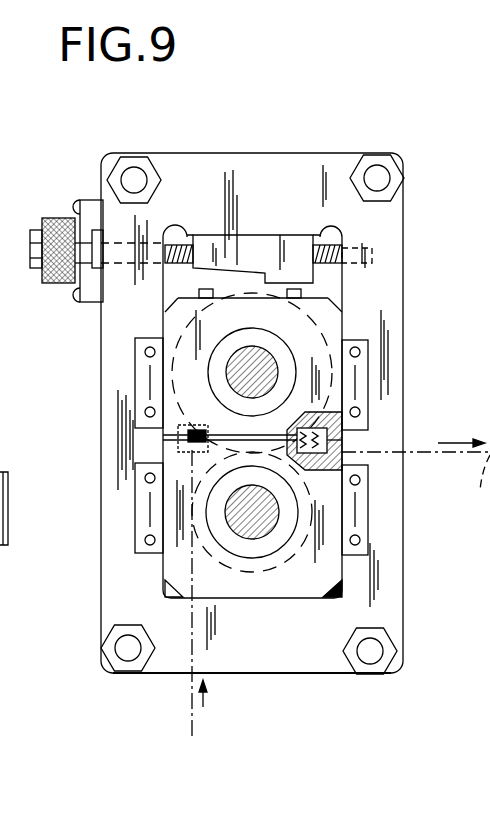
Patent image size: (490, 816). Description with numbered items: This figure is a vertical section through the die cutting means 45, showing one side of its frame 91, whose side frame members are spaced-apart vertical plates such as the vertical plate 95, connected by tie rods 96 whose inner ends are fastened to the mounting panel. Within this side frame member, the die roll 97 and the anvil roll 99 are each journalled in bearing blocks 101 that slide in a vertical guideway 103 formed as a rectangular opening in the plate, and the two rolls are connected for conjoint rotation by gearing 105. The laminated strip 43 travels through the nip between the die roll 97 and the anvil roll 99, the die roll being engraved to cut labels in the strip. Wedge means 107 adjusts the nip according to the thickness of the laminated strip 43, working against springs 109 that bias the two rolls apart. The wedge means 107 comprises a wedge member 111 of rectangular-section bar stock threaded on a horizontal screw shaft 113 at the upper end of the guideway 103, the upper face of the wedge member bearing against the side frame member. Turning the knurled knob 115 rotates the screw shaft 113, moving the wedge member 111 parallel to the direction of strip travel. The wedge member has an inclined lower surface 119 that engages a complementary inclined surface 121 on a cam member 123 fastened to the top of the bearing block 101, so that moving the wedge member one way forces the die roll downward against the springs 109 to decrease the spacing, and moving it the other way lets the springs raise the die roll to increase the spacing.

The laminated strip 43 is at (190, 689).
The die cutting means 45 is at (388, 124).
The frame 91 is at (184, 149).
The vertical plate 95 is at (273, 668).
The tie rods 96 is at (129, 172).
The die roll 97 is at (333, 397).
The anvil roll 99 is at (312, 512).
The bearing blocks 101 is at (342, 338).
The vertical guideways 103 is at (335, 333).
The gearing 105 is at (10, 400).
The wedge means 107 is at (63, 203).
The springs 109 is at (352, 448).
The wedge members 111 is at (302, 242).
The screw shafts 113 is at (372, 262).
The knurled knobs 115 is at (53, 288).
The inclined lower surface 119 is at (200, 273).
The inclined surface 121 is at (300, 272).
The cam member 123 is at (322, 298).